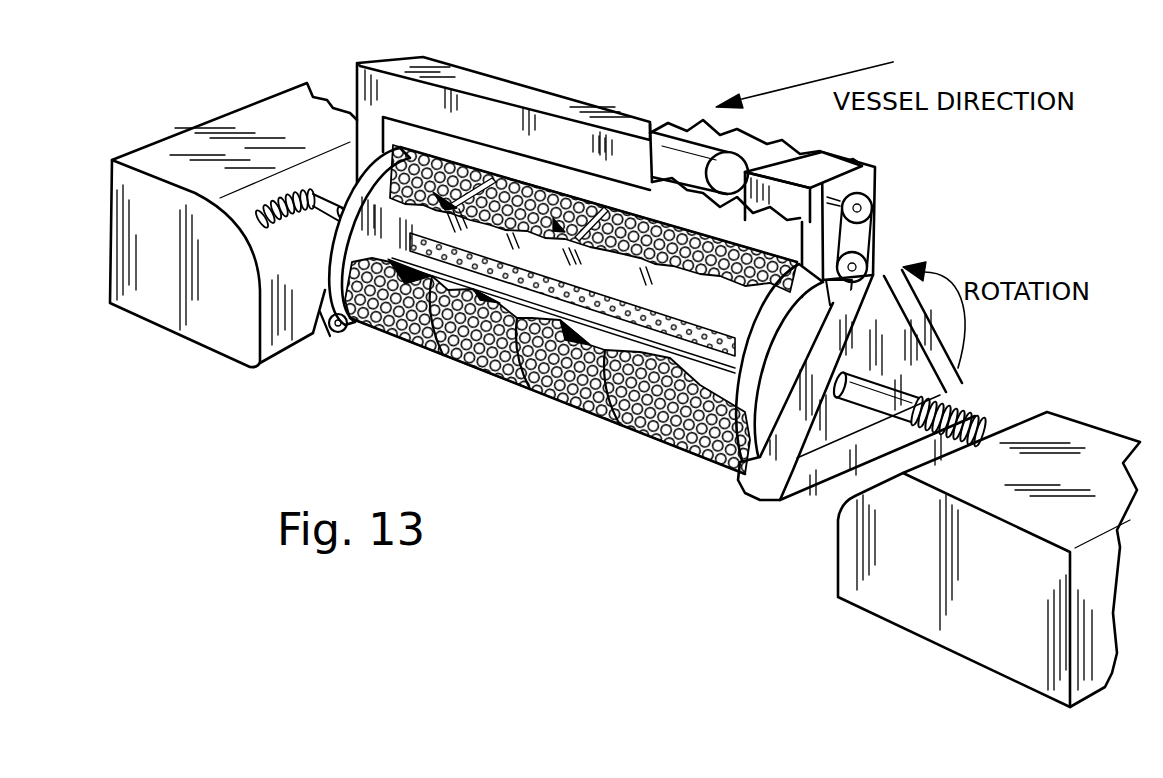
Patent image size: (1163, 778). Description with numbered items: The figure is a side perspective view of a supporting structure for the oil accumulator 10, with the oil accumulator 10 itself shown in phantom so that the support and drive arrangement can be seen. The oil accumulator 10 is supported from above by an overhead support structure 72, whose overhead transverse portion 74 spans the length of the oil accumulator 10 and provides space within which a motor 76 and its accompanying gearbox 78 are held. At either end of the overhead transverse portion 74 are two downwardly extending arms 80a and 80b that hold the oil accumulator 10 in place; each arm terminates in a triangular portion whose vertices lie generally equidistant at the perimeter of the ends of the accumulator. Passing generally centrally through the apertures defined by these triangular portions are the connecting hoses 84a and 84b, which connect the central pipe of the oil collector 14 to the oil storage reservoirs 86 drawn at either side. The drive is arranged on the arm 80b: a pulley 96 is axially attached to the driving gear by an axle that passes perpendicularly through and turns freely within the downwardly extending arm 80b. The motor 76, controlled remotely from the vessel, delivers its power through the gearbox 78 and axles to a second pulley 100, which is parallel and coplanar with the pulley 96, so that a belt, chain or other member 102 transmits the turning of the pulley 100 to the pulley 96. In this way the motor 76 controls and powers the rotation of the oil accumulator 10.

The oil accumulator 10 is at (612, 473).
The oil collector 14 is at (460, 378).
The overhead support structure 72 is at (597, 70).
The overhead transverse portion 74 is at (501, 134).
The motor 76 is at (695, 177).
The gearbox 78 is at (800, 210).
The downwardly extending arm 80a is at (318, 333).
The downwardly extending arm 80b is at (780, 473).
The connecting hose 84a is at (272, 200).
The connecting hose 84b is at (958, 412).
The oil storage reservoir 86 is at (172, 249).
The pulley 96 is at (872, 262).
The second pulley 100 is at (873, 206).
The belt, chain or other member 102 is at (875, 222).